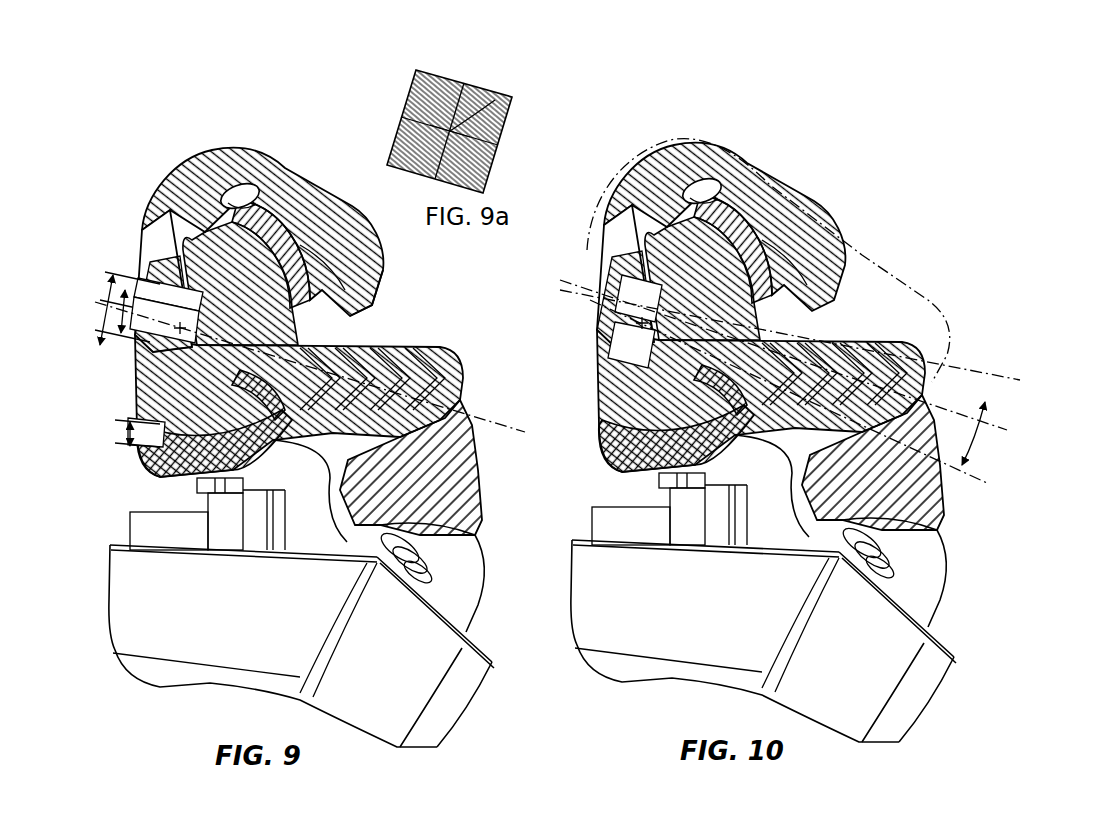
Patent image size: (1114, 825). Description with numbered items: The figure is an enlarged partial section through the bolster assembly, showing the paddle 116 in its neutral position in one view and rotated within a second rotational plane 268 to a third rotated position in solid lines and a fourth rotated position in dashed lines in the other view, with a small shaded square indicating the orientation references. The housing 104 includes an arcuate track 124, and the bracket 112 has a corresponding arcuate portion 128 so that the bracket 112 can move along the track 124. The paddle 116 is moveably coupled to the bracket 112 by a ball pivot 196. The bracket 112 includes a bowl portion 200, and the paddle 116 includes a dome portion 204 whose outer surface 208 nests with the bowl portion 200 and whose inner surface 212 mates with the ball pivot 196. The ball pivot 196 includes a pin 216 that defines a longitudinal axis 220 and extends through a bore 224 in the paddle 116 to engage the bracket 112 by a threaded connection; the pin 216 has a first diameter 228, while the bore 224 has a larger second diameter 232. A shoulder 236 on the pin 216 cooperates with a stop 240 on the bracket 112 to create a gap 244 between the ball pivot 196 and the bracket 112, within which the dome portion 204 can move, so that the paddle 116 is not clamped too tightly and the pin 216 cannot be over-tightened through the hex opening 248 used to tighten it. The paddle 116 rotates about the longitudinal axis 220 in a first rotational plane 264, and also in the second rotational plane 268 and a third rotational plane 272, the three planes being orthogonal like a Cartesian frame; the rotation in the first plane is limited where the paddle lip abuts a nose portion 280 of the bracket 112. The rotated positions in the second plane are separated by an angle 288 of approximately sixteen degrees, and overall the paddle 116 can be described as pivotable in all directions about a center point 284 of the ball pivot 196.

In FIG. 9, the housing 104 is at (133, 627).
In FIG. 10, the housing 104 is at (603, 617).
In FIG. 9, the bracket 112 is at (456, 493).
In FIG. 10, the bracket 112 is at (920, 505).
In FIG. 9, the paddle 116 is at (208, 158).
In FIG. 10, the paddle 116 is at (672, 148).
In FIG. 9, the track 124 is at (432, 715).
In FIG. 10, the track 124 is at (895, 715).
In FIG. 9, the arcuate portion 128 is at (448, 612).
In FIG. 10, the arcuate portion 128 is at (915, 605).
In FIG. 9, the ball pivot 196 is at (170, 300).
In FIG. 10, the ball pivot 196 is at (637, 253).
In FIG. 9, the bowl portion 200 is at (290, 212).
In FIG. 10, the bowl portion 200 is at (762, 230).
In FIG. 9, the dome portion 204 is at (258, 205).
In FIG. 10, the dome portion 204 is at (742, 212).
In FIG. 9, the outer surface 208 is at (302, 245).
In FIG. 10, the outer surface 208 is at (790, 255).
In FIG. 9, the inner surface 212 is at (238, 198).
In FIG. 10, the inner surface 212 is at (700, 195).
In FIG. 9, the pin 216 is at (455, 358).
In FIG. 10, the pin 216 is at (935, 370).
In FIG. 9, the longitudinal axis 220 is at (488, 420).
In FIG. 9a, the longitudinal axis 220 is at (522, 120).
In FIG. 10, the longitudinal axis 220 is at (990, 430).
In FIG. 9, the bore 224 is at (298, 288).
In FIG. 9, the first diameter 228 is at (126, 276).
In FIG. 9, the second diameter 232 is at (102, 326).
In FIG. 9, the shoulder 236 is at (302, 336).
In FIG. 10, the shoulder 236 is at (858, 262).
In FIG. 9, the stop 240 is at (362, 340).
In FIG. 10, the stop 240 is at (870, 306).
In FIG. 9, the gap 244 is at (125, 432).
In FIG. 9, the hex opening 248 is at (136, 378).
In FIG. 10, the hex opening 248 is at (620, 375).
In FIG. 9a, the first rotational plane 264 is at (468, 92).
In FIG. 9a, the second rotational plane 268 is at (425, 78).
In FIG. 9a, the third rotational plane 272 is at (490, 135).
In FIG. 9, the nose portion 280 is at (446, 360).
In FIG. 10, the nose portion 280 is at (900, 335).
In FIG. 9, the center point 284 is at (230, 330).
In FIG. 9a, the center point 284 is at (480, 100).
In FIG. 10, the center point 284 is at (640, 322).
In FIG. 10, the angle 288 is at (985, 400).